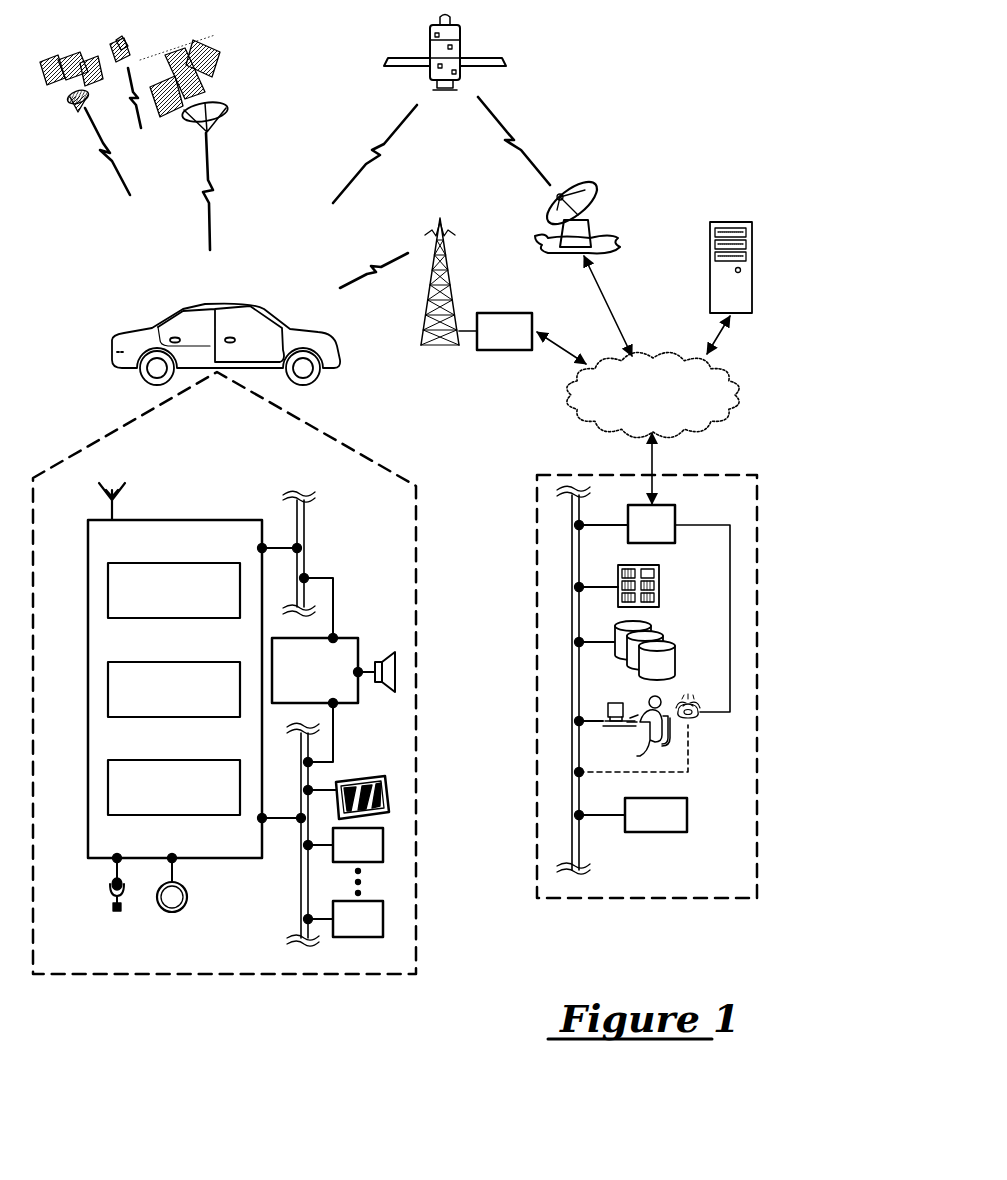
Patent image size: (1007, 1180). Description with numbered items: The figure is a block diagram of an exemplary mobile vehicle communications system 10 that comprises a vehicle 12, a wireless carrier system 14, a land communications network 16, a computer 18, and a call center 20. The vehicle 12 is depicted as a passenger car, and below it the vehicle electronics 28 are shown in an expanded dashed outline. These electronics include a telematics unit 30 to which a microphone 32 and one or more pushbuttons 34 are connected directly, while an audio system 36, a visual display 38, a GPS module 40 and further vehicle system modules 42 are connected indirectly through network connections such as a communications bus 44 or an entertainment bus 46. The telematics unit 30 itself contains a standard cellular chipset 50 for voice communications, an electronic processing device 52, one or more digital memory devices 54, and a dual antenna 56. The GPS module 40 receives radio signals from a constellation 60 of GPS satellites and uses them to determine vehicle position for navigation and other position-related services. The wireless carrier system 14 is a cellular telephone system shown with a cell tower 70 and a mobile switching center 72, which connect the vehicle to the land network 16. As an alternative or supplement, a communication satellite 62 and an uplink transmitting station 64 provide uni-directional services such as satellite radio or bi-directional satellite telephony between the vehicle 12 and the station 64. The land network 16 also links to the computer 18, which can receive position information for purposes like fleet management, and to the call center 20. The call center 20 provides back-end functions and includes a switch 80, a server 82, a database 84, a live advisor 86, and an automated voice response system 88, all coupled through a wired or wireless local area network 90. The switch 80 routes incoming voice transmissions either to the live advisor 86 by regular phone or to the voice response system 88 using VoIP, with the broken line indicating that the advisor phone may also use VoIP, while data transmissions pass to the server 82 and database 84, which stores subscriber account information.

The mobile vehicle communications system 10 is at (678, 56).
The vehicle 12 is at (112, 348).
The wireless carrier system 14 is at (472, 321).
The land communications network 16 is at (653, 394).
The computer 18 is at (752, 280).
The call center 20 is at (632, 898).
The vehicle electronics 28 is at (213, 975).
The telematics unit 30 is at (175, 668).
The microphone 32 is at (110, 897).
The pushbutton 34 is at (188, 897).
The audio system 36 is at (333, 698).
The visual display 38 is at (355, 778).
The GPS module 40 is at (344, 845).
The vehicle system module 42 is at (344, 919).
The communications bus 44 is at (300, 888).
The entertainment bus 46 is at (305, 525).
The cellular chipset 50 is at (174, 590).
The electronic processing device 52 is at (174, 689).
The digital memory device 54 is at (174, 787).
The dual antenna 56 is at (111, 512).
The constellation of GPS satellites 60 is at (262, 104).
The communication satellite 62 is at (461, 34).
The uplink transmitting station 64 is at (598, 230).
The cell tower 70 is at (450, 278).
The mobile switching center 72 is at (495, 331).
The switch 80 is at (653, 608).
The server 82 is at (662, 595).
The database 84 is at (676, 661).
The live advisor 86 is at (640, 741).
The automated voice response system 88 is at (631, 815).
The local area network 90 is at (580, 850).